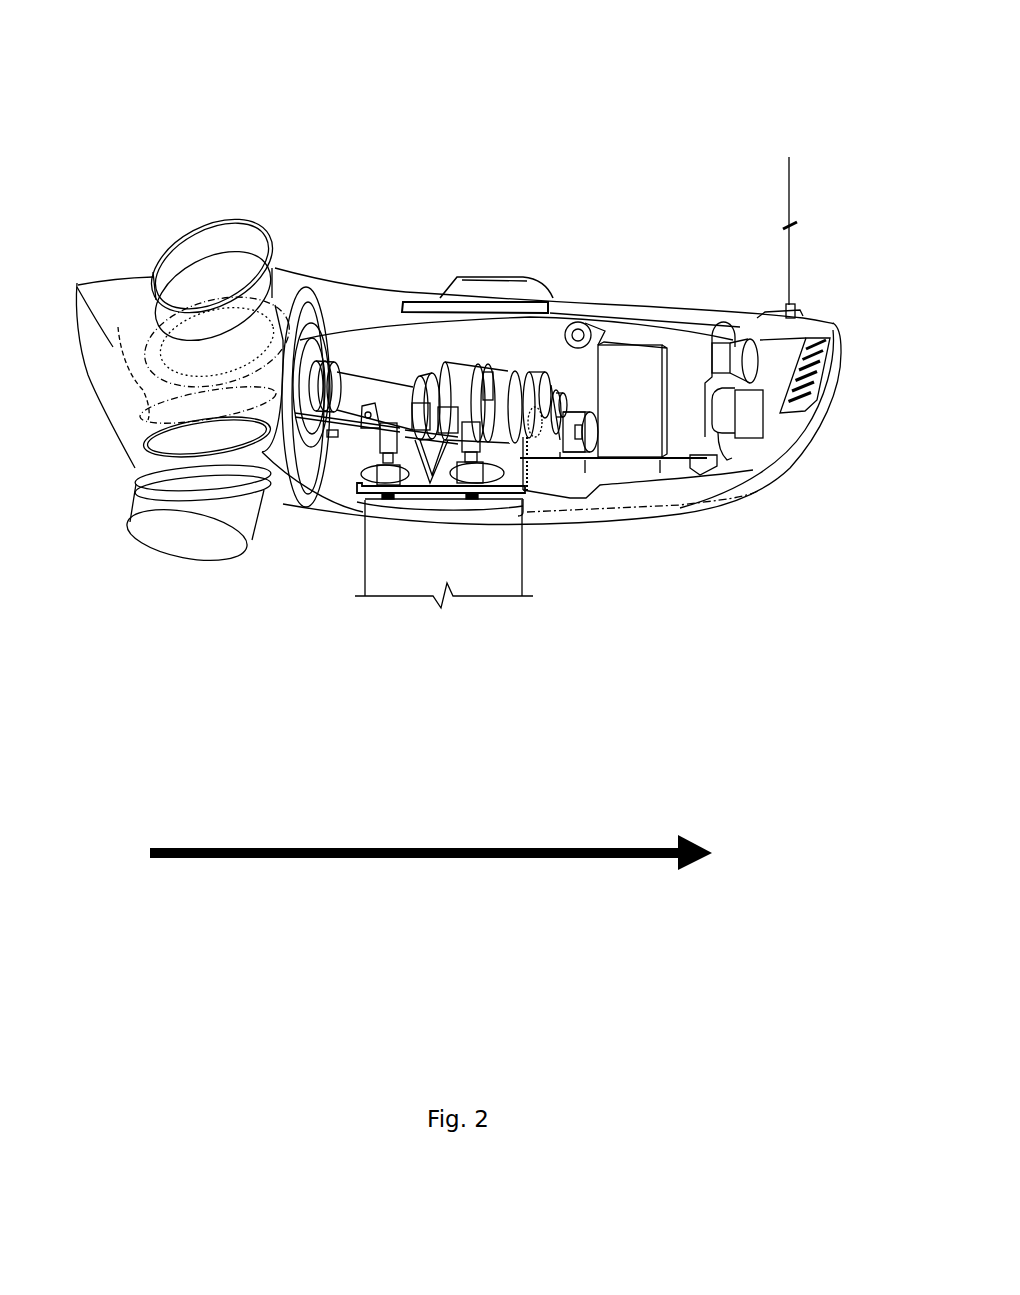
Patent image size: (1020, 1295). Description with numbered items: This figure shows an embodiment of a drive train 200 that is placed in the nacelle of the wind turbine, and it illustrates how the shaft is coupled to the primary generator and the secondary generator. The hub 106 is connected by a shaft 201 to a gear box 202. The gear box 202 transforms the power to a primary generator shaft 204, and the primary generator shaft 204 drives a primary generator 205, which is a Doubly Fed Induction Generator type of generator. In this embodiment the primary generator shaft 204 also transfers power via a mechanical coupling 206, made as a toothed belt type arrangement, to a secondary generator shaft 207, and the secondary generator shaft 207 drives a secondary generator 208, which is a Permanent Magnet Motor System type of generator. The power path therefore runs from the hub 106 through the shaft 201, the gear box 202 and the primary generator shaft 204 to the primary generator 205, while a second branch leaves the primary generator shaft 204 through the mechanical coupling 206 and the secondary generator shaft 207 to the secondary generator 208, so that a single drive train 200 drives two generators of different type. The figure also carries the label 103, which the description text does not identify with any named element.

The housing 103 is at (413, 237).
The hub 106 is at (77, 283).
The drive train 200 is at (421, 858).
The shaft 201 is at (361, 392).
The gear box 202 is at (468, 343).
The primary generator shaft 204 is at (580, 397).
The primary generator 205 is at (627, 373).
The mechanical coupling 206 is at (553, 422).
The secondary generator shaft 207 is at (565, 420).
The secondary generator 208 is at (568, 455).